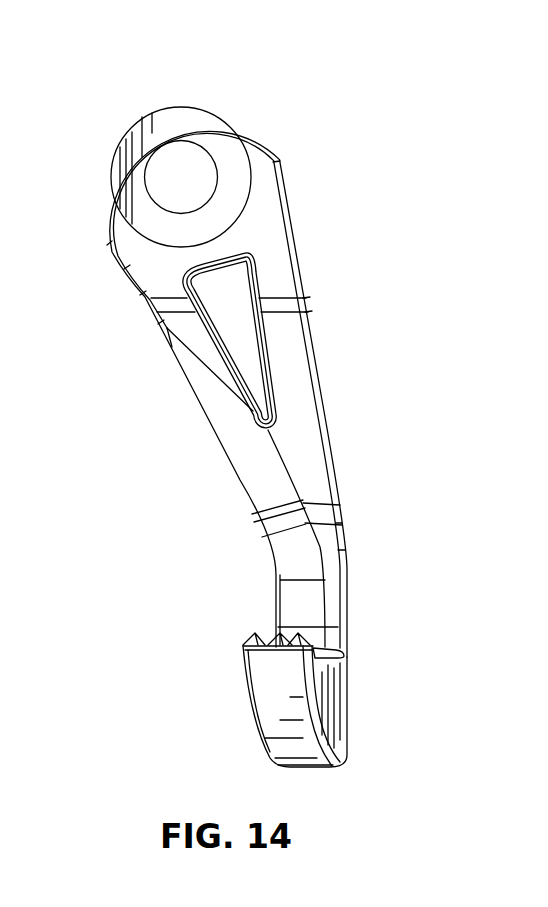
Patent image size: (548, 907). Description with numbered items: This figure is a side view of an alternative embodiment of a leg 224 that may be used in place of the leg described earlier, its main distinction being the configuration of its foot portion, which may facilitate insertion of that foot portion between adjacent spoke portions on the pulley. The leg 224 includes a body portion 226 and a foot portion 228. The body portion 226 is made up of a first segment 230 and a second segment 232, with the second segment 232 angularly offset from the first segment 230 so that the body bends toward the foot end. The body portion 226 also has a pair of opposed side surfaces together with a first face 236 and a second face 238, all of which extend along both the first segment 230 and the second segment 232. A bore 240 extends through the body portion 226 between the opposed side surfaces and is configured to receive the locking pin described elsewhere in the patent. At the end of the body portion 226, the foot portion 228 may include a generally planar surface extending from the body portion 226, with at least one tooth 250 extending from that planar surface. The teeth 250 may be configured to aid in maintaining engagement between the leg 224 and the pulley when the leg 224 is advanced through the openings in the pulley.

The leg 224 is at (255, 74).
The body portion 226 is at (312, 284).
The foot portion 228 is at (240, 707).
The first segment 230 is at (177, 345).
The second segment 232 is at (348, 584).
The first face 236 is at (293, 238).
The second face 238 is at (134, 288).
The bore 240 is at (173, 171).
The tooth 250 is at (276, 639).